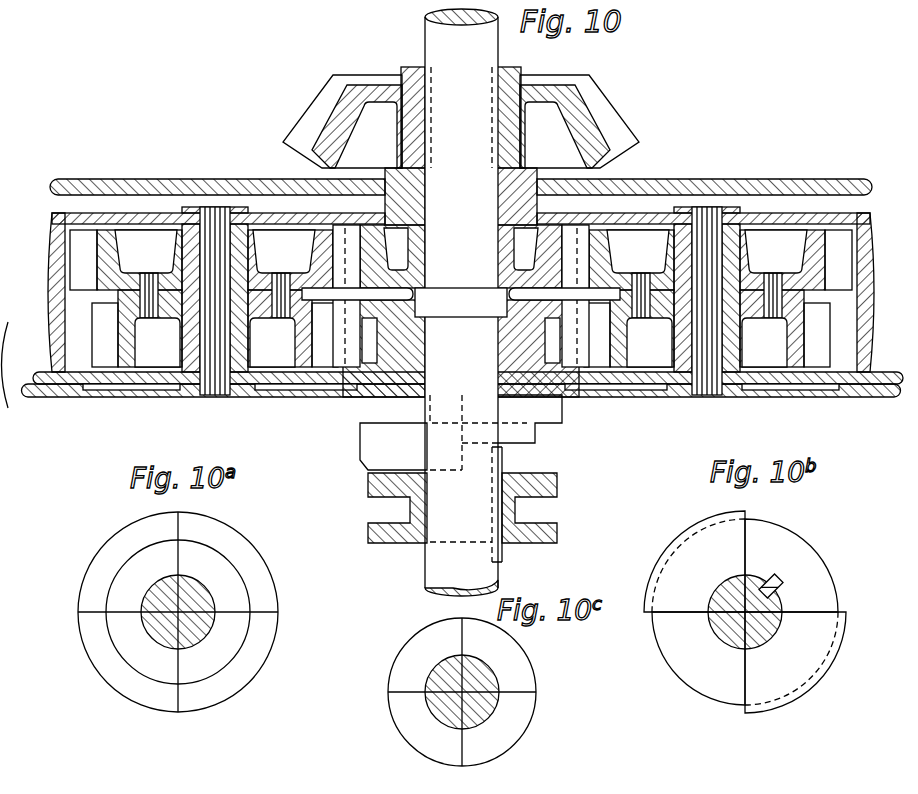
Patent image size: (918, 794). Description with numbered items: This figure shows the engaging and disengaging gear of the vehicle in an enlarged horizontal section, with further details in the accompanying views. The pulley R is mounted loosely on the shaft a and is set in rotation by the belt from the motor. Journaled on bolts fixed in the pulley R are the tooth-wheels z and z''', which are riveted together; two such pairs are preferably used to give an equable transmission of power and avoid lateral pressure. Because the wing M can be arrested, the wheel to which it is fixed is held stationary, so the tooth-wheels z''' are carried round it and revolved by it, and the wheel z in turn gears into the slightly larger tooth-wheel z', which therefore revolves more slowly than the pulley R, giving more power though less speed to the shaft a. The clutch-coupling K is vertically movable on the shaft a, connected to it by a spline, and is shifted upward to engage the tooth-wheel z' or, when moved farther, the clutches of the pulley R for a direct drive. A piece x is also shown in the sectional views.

In FIG. 10, the wing M is at (163, 178).
In FIG. 10, the pulley R is at (46, 268).
In FIG. 10, the tooth-wheel z''' is at (461, 251).
In FIG. 10, the tooth-wheel z is at (461, 342).
In FIG. 10, the tooth-wheel z' is at (461, 297).
In FIG. 10C, the tooth-wheel z' is at (462, 692).
In FIG. 10, the collar piece x is at (560, 413).
In FIG. 10A, the collar piece x is at (178, 612).
In FIG. 10, the clutch-coupling K is at (459, 492).
In FIG. 10B, the clutch-coupling K is at (745, 612).
In FIG. 10, the shaft a is at (471, 302).